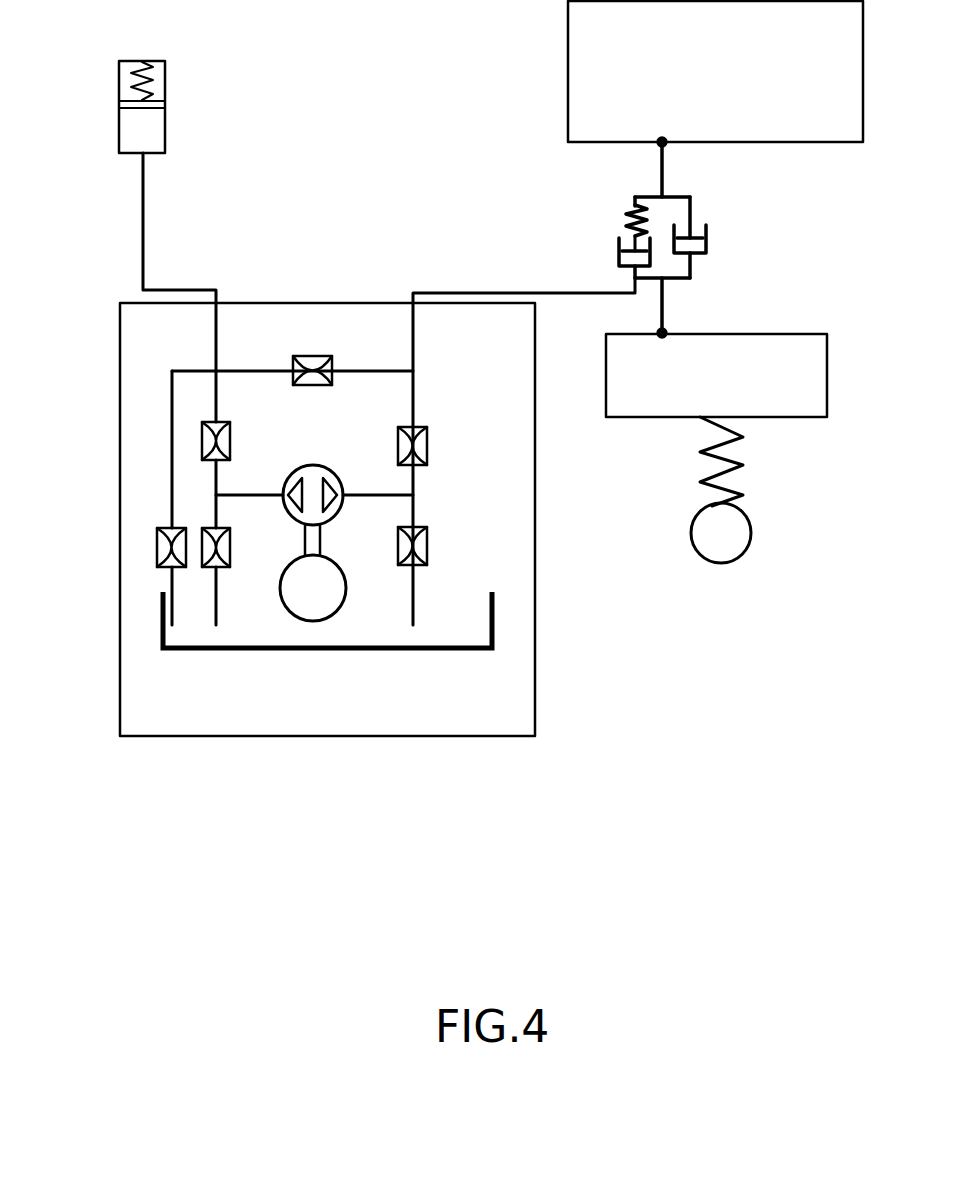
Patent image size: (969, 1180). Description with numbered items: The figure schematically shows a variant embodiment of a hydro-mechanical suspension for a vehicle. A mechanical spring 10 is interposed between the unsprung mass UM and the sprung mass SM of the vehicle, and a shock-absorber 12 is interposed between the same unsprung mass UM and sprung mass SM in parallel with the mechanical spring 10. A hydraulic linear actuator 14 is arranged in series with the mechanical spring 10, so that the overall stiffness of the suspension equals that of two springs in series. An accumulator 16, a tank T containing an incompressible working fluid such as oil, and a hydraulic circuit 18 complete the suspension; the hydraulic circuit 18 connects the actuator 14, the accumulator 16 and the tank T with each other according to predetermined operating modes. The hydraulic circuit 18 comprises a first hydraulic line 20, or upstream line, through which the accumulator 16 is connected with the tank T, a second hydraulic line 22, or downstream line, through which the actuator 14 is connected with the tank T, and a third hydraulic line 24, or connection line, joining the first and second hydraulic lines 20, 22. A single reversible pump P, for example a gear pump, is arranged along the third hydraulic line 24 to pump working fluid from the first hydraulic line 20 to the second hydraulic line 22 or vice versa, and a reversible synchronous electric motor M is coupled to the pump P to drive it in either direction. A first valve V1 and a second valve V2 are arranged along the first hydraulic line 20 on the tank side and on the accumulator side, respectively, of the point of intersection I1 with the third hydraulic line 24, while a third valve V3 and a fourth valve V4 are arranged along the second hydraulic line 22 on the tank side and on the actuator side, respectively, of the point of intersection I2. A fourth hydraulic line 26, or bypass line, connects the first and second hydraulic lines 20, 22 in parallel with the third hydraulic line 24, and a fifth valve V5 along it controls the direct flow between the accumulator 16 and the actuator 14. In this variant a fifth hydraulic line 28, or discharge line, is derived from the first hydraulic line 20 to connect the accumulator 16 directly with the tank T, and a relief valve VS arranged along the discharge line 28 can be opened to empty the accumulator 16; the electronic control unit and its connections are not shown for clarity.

The mechanical spring 10 is at (620, 212).
The shock-absorber 12 is at (708, 233).
The hydraulic linear actuator 14 is at (617, 257).
The accumulator 16 is at (166, 113).
The hydraulic circuit 18 is at (535, 695).
The first hydraulic line 20 is at (145, 228).
The second hydraulic line 22 is at (460, 290).
The third hydraulic line 24 is at (360, 495).
The fourth hydraulic line 26 is at (250, 370).
The fifth hydraulic line 28 is at (170, 393).
The pump P is at (303, 462).
The electric motor M is at (345, 600).
The tank T is at (257, 652).
The first valve V1 is at (207, 528).
The second valve V2 is at (200, 437).
The third valve V3 is at (428, 535).
The fourth valve V4 is at (427, 428).
The fifth valve V5 is at (314, 355).
The relief valve VS is at (157, 545).
The point of intersection I1 is at (217, 500).
The point of intersection I2 is at (415, 497).
The sprung mass SM is at (715, 71).
The unsprung mass UM is at (716, 448).